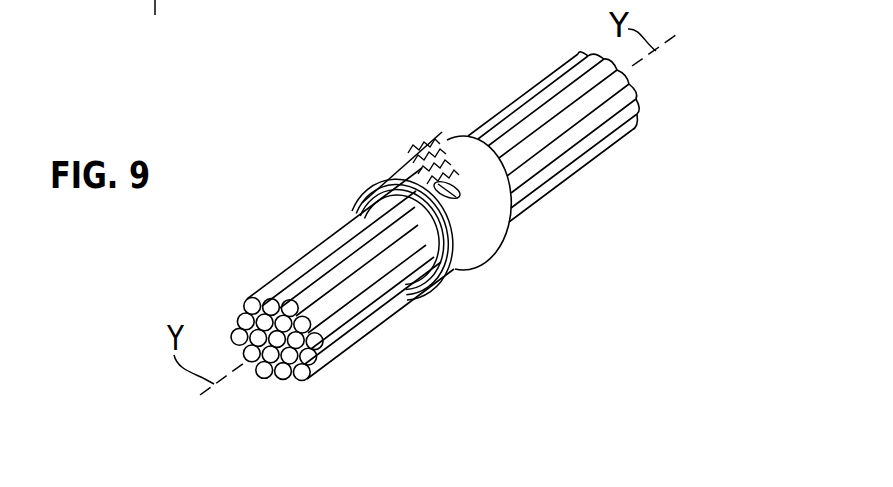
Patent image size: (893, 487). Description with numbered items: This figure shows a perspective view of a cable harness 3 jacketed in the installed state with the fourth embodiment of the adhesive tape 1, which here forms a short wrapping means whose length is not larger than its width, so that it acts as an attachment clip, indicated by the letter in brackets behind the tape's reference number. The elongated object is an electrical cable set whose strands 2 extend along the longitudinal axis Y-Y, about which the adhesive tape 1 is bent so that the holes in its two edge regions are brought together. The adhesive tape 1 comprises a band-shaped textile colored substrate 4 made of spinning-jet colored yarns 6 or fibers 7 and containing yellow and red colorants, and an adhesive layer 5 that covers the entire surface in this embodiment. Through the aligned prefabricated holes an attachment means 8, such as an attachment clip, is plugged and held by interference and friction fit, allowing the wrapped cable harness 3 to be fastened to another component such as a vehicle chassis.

The adhesive tape 1 is at (399, 139).
The strands 2 is at (367, 292).
The cable harness 3 is at (457, 257).
The textile colored substrate 4 is at (345, 206).
The adhesive layer 5 is at (358, 213).
The yarns 6 is at (402, 239).
The fibers 7 is at (355, 207).
The attachment means 8 is at (438, 132).